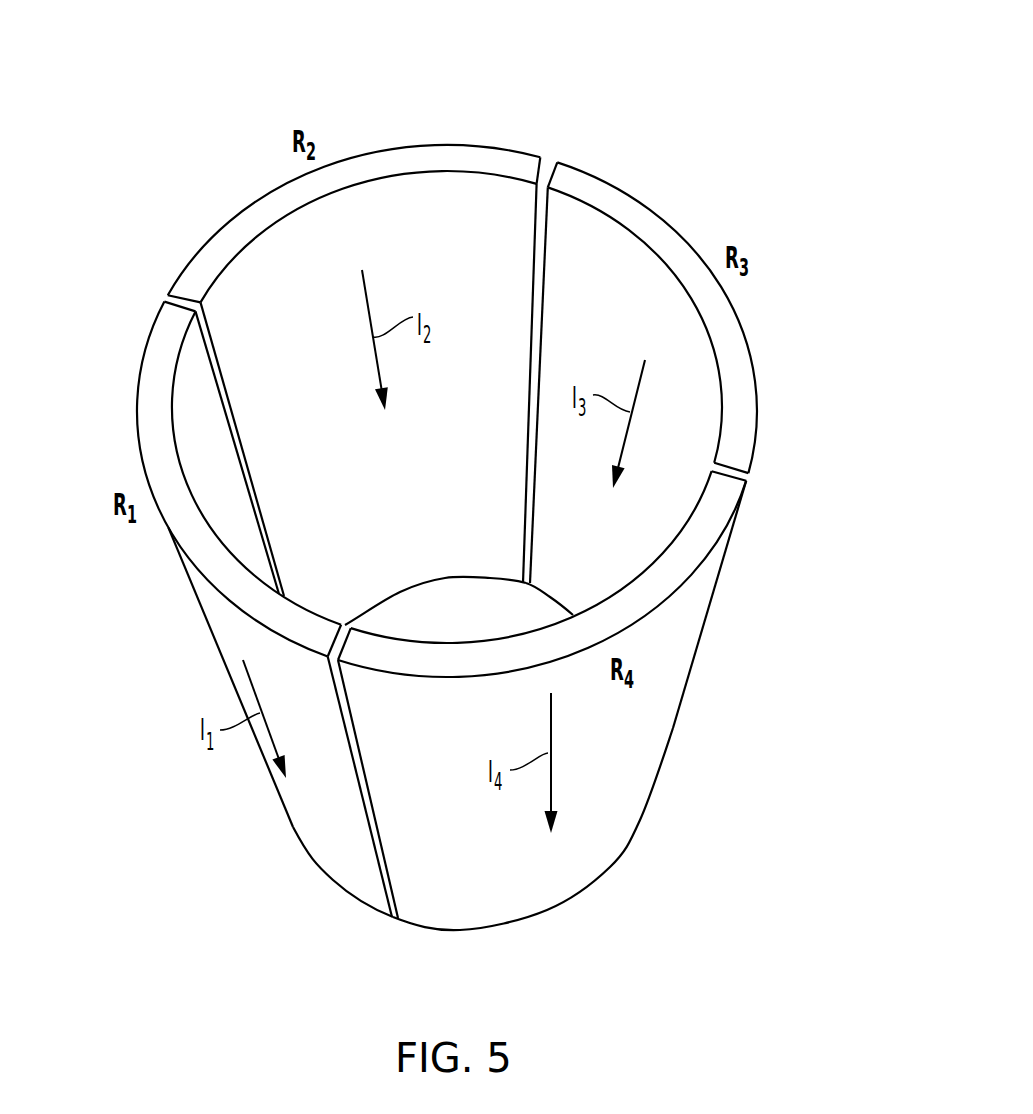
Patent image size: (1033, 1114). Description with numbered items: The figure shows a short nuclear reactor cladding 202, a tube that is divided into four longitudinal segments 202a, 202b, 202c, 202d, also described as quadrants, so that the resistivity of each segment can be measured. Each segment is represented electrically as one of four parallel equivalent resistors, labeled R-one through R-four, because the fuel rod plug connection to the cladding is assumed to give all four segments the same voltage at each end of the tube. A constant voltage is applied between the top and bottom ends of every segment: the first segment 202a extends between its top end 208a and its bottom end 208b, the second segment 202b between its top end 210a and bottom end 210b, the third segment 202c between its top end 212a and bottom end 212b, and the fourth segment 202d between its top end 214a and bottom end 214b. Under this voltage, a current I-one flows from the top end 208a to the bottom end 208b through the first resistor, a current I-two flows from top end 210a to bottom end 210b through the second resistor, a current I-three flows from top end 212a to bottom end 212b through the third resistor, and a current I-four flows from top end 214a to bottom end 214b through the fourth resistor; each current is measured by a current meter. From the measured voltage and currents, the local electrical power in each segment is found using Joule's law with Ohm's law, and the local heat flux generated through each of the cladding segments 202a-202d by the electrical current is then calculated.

The short nuclear reactor cladding 202 is at (660, 102).
The longitudinal segment 202a is at (230, 631).
The longitudinal segment 202b is at (354, 358).
The longitudinal segment 202c is at (632, 394).
The longitudinal segment 202d is at (560, 731).
The top end 208a is at (198, 557).
The bottom end 208b is at (337, 878).
The top end 210a is at (282, 192).
The bottom end 210b is at (440, 577).
The top end 212a is at (723, 340).
The bottom end 212b is at (540, 597).
The top end 214a is at (627, 615).
The bottom end 214b is at (548, 913).